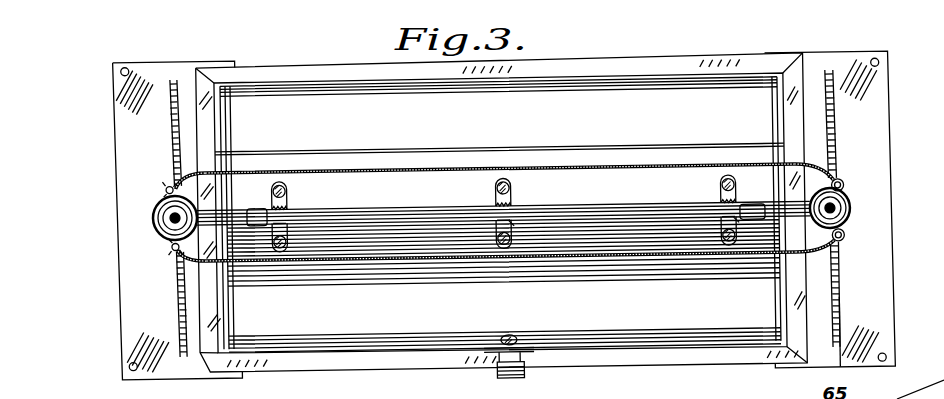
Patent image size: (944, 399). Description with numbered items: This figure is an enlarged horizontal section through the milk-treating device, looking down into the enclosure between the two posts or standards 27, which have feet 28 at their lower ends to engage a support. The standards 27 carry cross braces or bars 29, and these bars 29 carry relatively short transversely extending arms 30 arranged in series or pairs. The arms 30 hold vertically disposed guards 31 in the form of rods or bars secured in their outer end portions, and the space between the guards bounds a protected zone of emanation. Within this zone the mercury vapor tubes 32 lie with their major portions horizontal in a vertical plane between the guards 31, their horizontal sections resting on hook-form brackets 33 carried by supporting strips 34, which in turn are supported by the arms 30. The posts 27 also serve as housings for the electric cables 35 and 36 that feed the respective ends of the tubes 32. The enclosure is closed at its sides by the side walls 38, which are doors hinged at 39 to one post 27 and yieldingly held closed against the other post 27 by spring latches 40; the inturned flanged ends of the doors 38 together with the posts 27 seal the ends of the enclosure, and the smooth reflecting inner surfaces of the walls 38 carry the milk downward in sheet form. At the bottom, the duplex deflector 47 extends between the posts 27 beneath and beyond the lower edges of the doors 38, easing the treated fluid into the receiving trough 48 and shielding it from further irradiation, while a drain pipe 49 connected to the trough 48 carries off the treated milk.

The posts or standards 27 is at (160, 226).
The feet 28 is at (180, 300).
The cross braces or bars 29 is at (407, 215).
The arms 30 is at (288, 242).
The guards 31 is at (286, 194).
The mercury vapor tubes 32 is at (350, 215).
The brackets 33 is at (522, 232).
The supporting strips 34 is at (276, 211).
The electric cable 35 is at (157, 215).
The electric cable 36 is at (843, 213).
The side walls 38 is at (587, 173).
The hinges 39 is at (843, 193).
The spring latches 40 is at (168, 187).
The deflector 47 is at (422, 276).
The receiving or catching trough 48 is at (355, 369).
The drain pipe 49 is at (515, 378).